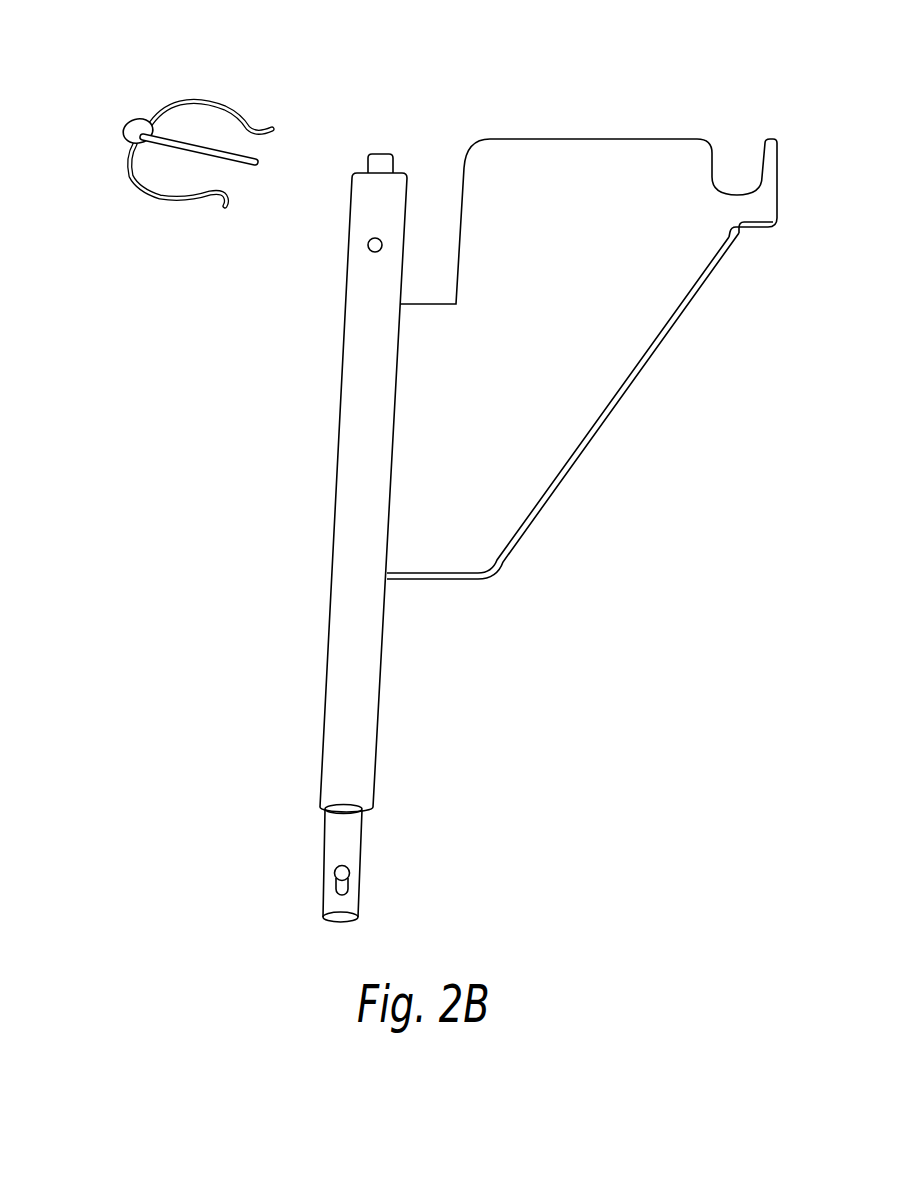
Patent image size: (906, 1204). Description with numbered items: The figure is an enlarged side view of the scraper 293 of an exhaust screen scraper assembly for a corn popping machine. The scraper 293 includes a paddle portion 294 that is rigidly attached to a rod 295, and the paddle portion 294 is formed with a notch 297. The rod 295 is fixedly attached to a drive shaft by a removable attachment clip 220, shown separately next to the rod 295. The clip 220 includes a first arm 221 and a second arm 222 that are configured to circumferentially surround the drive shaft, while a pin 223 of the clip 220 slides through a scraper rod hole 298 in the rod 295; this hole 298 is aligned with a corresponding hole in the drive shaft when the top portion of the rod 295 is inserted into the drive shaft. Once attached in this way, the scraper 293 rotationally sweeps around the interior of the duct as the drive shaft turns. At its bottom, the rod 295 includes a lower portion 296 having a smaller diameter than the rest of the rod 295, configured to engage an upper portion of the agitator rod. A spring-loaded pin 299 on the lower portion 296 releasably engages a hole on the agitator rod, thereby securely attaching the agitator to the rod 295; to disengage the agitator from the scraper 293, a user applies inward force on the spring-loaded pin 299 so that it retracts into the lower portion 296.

The removable attachment clip 220 is at (192, 151).
The first arm 221 is at (185, 102).
The second arm 222 is at (160, 202).
The pin 223 is at (260, 163).
The scraper 293 is at (595, 432).
The paddle portion 294 is at (623, 313).
The rod 295 is at (320, 720).
The lower portion 296 is at (325, 833).
The notch 297 is at (740, 193).
The scraper rod hole 298 is at (370, 245).
The spring-loaded pin 299 is at (333, 887).